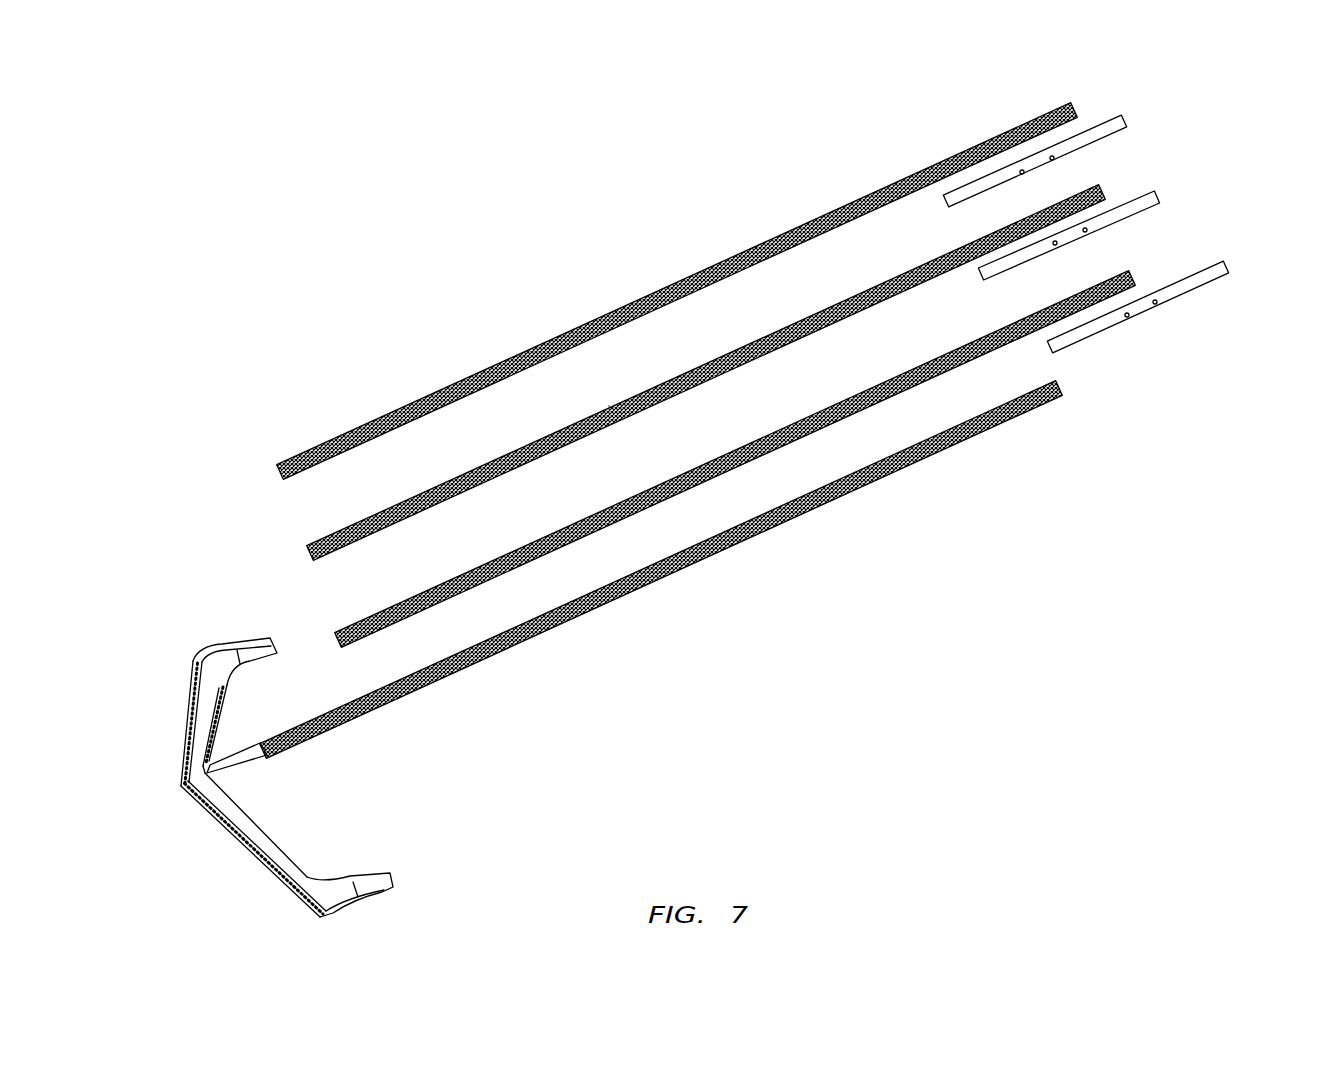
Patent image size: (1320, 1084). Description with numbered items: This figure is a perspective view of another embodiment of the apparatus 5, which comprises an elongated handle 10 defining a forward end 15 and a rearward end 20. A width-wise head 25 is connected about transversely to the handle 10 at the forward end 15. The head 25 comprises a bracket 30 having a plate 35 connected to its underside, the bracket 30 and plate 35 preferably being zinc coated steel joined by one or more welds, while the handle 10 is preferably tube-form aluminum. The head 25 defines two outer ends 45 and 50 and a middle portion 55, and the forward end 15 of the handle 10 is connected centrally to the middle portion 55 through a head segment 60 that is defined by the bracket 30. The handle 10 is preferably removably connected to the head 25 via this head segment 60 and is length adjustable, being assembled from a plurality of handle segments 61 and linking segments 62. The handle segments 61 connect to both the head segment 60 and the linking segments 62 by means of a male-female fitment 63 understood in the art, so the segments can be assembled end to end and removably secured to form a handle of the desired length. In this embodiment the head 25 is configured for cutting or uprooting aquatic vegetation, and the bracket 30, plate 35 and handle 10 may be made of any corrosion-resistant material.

The apparatus 5 is at (704, 502).
The elongated handle 10 is at (698, 419).
The forward end 15 is at (273, 760).
The rearward end 20 is at (1069, 100).
The head 25 is at (216, 833).
The bracket 30 is at (205, 712).
The plate 35 is at (268, 870).
The outer end 45 is at (250, 625).
The outer end 50 is at (400, 905).
The middle portion 55 is at (176, 797).
The head segment 60 is at (232, 774).
The handle segments 61 is at (726, 529).
The linking segments 62 is at (1127, 126).
The male-female fitment 63 is at (1066, 373).